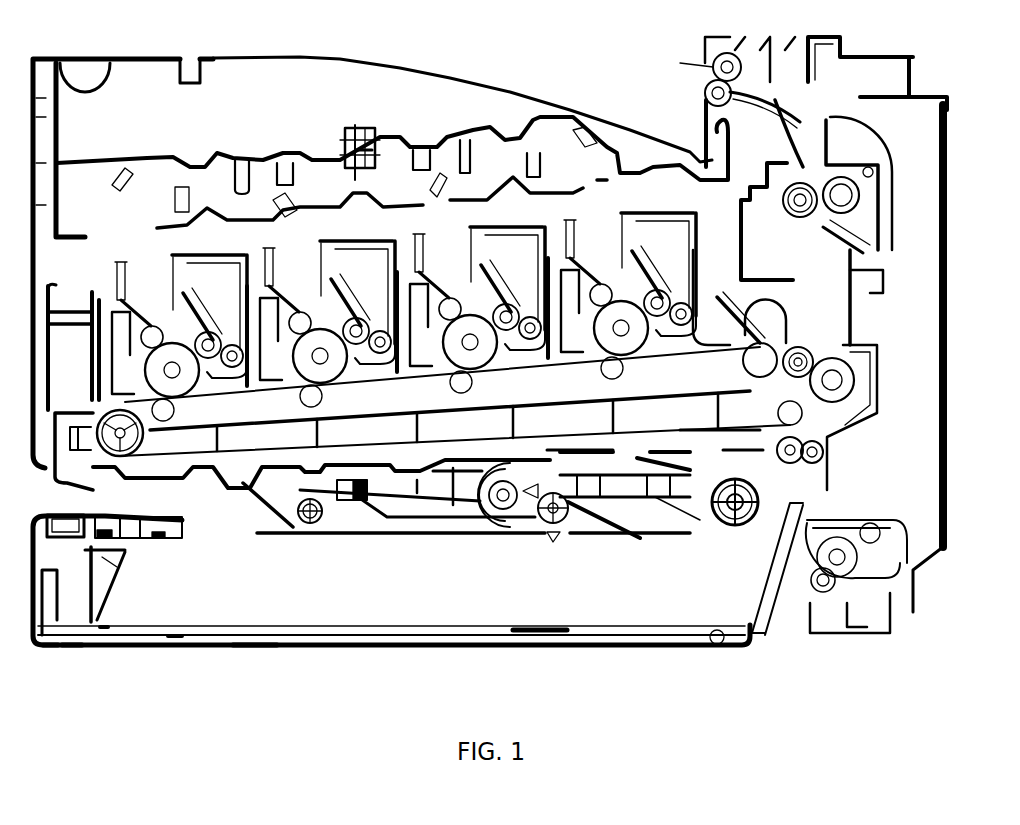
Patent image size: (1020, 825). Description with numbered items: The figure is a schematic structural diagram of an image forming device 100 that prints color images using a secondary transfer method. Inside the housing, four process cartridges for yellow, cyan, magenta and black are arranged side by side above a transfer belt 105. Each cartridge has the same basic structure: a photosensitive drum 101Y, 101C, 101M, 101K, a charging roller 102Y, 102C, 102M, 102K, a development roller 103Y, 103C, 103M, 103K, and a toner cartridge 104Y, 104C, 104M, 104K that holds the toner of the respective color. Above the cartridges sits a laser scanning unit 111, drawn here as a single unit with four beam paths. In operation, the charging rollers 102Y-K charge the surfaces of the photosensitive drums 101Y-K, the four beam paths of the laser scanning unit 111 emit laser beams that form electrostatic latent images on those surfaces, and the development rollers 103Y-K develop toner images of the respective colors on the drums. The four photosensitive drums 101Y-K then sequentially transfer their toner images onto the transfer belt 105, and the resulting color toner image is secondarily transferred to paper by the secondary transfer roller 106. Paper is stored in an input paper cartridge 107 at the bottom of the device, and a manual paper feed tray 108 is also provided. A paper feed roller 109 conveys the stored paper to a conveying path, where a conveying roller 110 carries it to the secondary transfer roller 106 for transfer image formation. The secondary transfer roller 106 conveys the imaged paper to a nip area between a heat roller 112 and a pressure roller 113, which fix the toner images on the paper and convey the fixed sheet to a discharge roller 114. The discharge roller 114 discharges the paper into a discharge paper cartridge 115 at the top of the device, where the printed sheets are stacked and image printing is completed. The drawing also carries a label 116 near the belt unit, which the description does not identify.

The image forming device 100 is at (430, 62).
The photosensitive drum 101K is at (152, 330).
The photosensitive drum 101M is at (300, 316).
The photosensitive drum 101C is at (450, 302).
The photosensitive drum 101Y is at (601, 288).
The charging roller 102K is at (122, 272).
The charging roller 102M is at (270, 258).
The charging roller 102C is at (420, 244).
The charging roller 102Y is at (571, 230).
The development roller 103K is at (208, 335).
The development roller 103M is at (356, 321).
The development roller 103C is at (506, 307).
The development roller 103Y is at (657, 293).
The toner cartridge 104K is at (208, 256).
The toner cartridge 104M is at (356, 242).
The toner cartridge 104C is at (506, 228).
The toner cartridge 104Y is at (657, 214).
The transfer belt 105 is at (490, 373).
The secondary transfer roller 106 is at (887, 355).
The input paper cartridge 107 is at (475, 577).
The manual paper feed tray 108 is at (240, 510).
The paper feed roller 109 is at (724, 530).
The conveying roller 110 is at (837, 455).
The laser scanning unit (LSU) 111 is at (357, 122).
The heat roller 112 is at (797, 237).
The pressure roller 113 is at (893, 222).
The discharge roller 114 is at (680, 63).
The discharge paper cartridge 115 is at (587, 100).
The belt cleaning device 116 is at (775, 308).